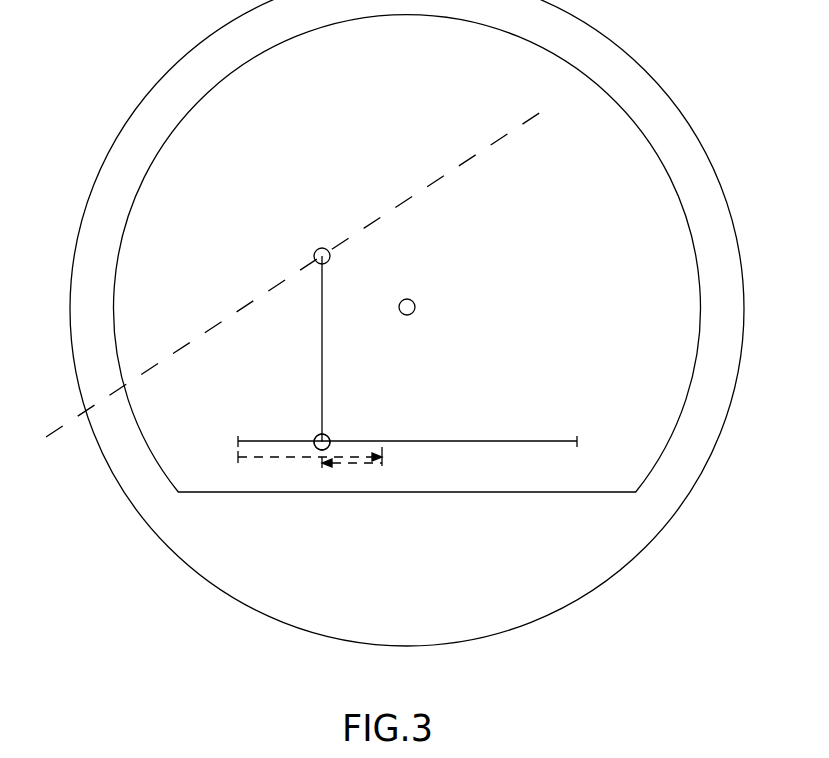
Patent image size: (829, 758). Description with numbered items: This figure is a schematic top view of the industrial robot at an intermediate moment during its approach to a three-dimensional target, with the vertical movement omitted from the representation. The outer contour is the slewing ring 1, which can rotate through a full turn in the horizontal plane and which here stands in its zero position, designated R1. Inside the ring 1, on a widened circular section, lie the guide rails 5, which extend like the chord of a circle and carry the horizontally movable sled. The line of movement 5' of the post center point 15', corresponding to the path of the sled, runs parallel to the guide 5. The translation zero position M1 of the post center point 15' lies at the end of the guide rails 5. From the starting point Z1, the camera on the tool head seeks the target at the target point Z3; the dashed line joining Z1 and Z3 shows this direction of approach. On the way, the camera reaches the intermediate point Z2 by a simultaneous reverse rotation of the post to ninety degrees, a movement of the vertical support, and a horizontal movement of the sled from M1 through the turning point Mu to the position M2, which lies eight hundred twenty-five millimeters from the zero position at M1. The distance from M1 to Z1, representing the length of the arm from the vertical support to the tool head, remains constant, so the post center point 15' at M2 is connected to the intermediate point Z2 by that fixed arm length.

The slewing ring 1 is at (710, 186).
The guide rails 5 is at (406, 278).
The line of movement 5' is at (407, 415).
The post center point 15' is at (314, 485).
The zero position of the ring R1 is at (403, 647).
The starting point Z1 is at (43, 432).
The intermediate point Z2 is at (357, 327).
The target point Z3 is at (544, 103).
The translation zero position M1 is at (305, 432).
The position M2 is at (337, 441).
The turning point Mu is at (382, 447).